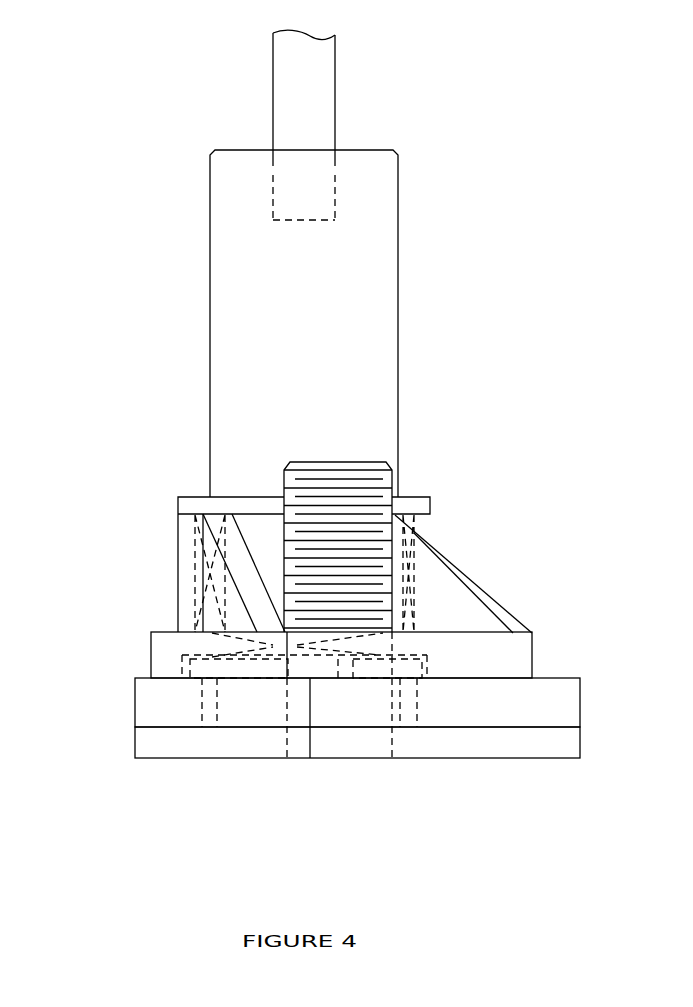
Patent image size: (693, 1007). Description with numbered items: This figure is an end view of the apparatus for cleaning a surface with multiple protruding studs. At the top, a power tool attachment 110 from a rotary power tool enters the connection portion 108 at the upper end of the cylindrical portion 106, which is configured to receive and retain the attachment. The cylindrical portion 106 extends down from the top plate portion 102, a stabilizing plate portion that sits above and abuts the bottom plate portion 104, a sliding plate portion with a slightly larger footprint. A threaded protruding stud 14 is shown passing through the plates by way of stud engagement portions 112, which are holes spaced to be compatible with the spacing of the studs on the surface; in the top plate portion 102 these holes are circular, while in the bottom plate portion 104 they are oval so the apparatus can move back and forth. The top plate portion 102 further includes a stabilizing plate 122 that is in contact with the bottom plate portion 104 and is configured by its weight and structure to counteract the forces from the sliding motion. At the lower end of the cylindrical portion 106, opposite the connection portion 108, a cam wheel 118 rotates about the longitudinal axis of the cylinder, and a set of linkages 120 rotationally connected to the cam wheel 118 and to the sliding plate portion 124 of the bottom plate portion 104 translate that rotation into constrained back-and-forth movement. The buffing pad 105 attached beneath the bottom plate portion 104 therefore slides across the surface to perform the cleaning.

The protruding stud 14 is at (340, 460).
The top plate portion 102 is at (178, 568).
The bottom plate portion 104 is at (367, 736).
The buffing pad 105 is at (562, 761).
The cylindrical portion 106 is at (400, 330).
The connection portion 108 is at (322, 148).
The power tool attachment 110 is at (273, 90).
The stud engagement portion 112 is at (408, 530).
The cam wheel 118 is at (244, 657).
The linkages 120 is at (369, 681).
The stabilizing plate 122 is at (150, 652).
The sliding plate portion 124 is at (580, 703).